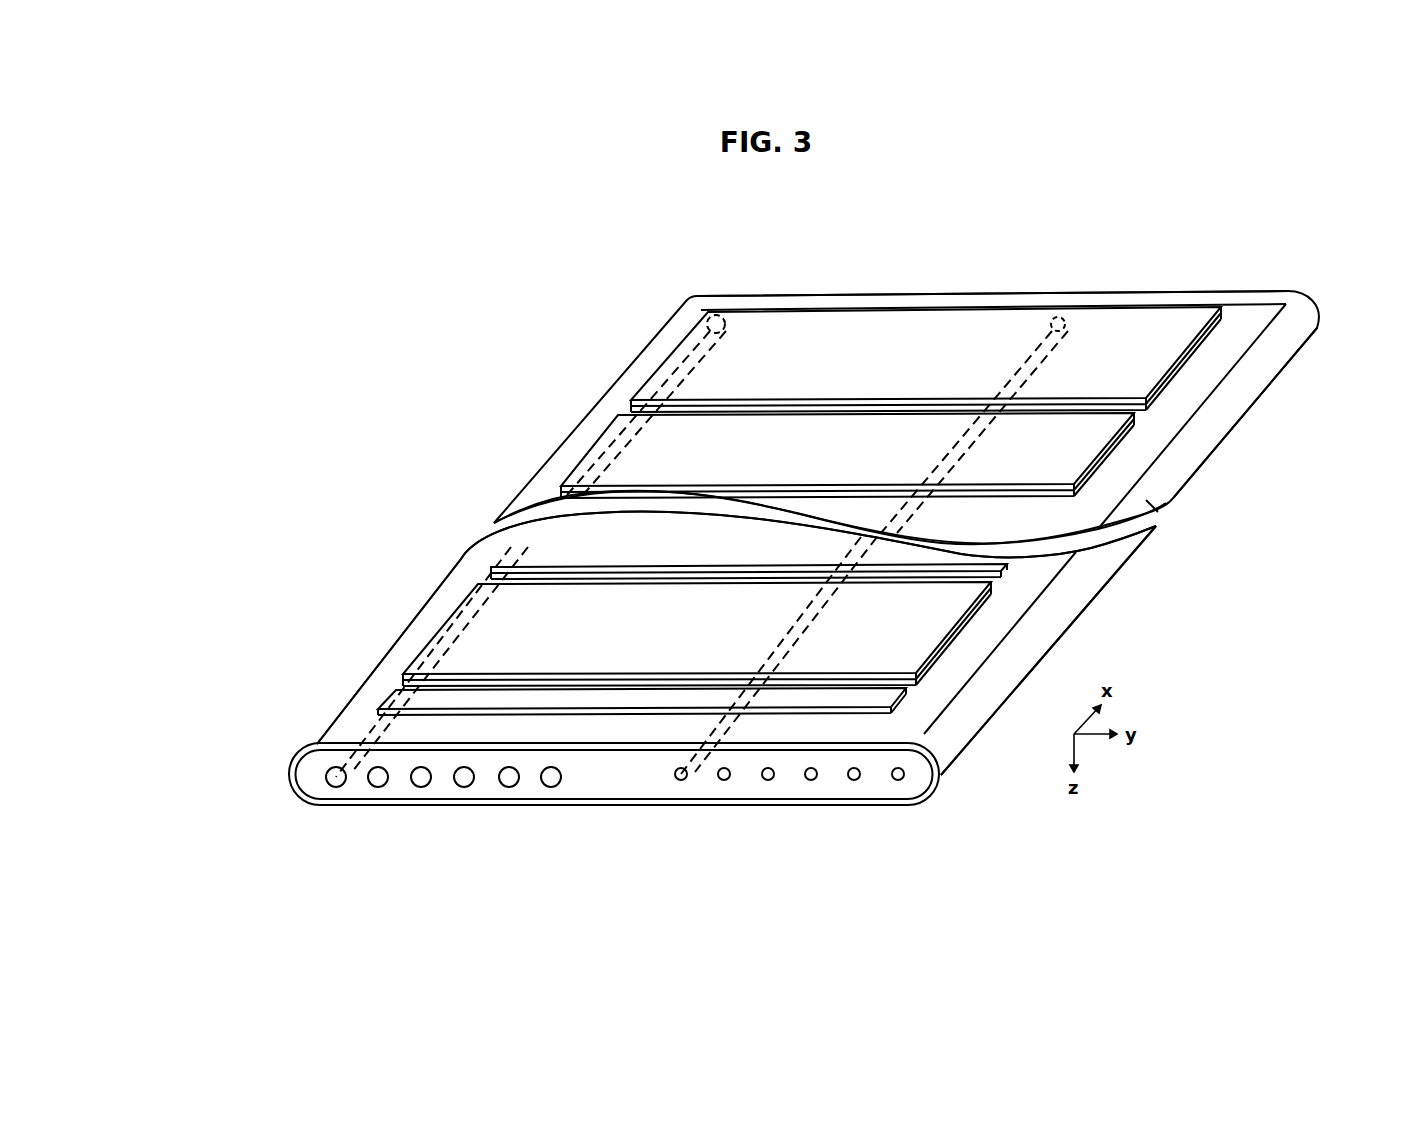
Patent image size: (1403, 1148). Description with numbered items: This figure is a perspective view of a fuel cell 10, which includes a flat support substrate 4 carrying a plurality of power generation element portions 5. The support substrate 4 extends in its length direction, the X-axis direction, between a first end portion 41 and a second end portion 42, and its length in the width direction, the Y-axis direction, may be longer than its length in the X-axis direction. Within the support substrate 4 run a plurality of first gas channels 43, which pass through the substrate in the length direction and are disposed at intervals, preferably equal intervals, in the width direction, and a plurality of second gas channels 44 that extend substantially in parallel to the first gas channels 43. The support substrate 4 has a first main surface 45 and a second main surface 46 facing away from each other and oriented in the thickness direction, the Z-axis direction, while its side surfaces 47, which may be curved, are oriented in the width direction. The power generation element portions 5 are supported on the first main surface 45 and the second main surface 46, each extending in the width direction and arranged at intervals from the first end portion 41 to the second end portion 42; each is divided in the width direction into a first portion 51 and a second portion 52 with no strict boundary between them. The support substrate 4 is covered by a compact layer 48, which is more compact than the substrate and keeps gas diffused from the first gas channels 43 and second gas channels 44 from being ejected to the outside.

The support substrate 4 is at (591, 786).
The power generation element portions 5 is at (707, 377).
The fuel cell 10 is at (915, 274).
The first end portion 41 is at (325, 735).
The second end portion 42 is at (737, 297).
The first gas channels 43 is at (338, 785).
The second gas channels 44 is at (683, 780).
The first main surface 45 is at (1180, 395).
The second main surface 46 is at (1157, 510).
The side surfaces 47 is at (1107, 558).
The compact layer 48 is at (421, 805).
The first portion 51 is at (757, 352).
The second portion 52 is at (1025, 340).